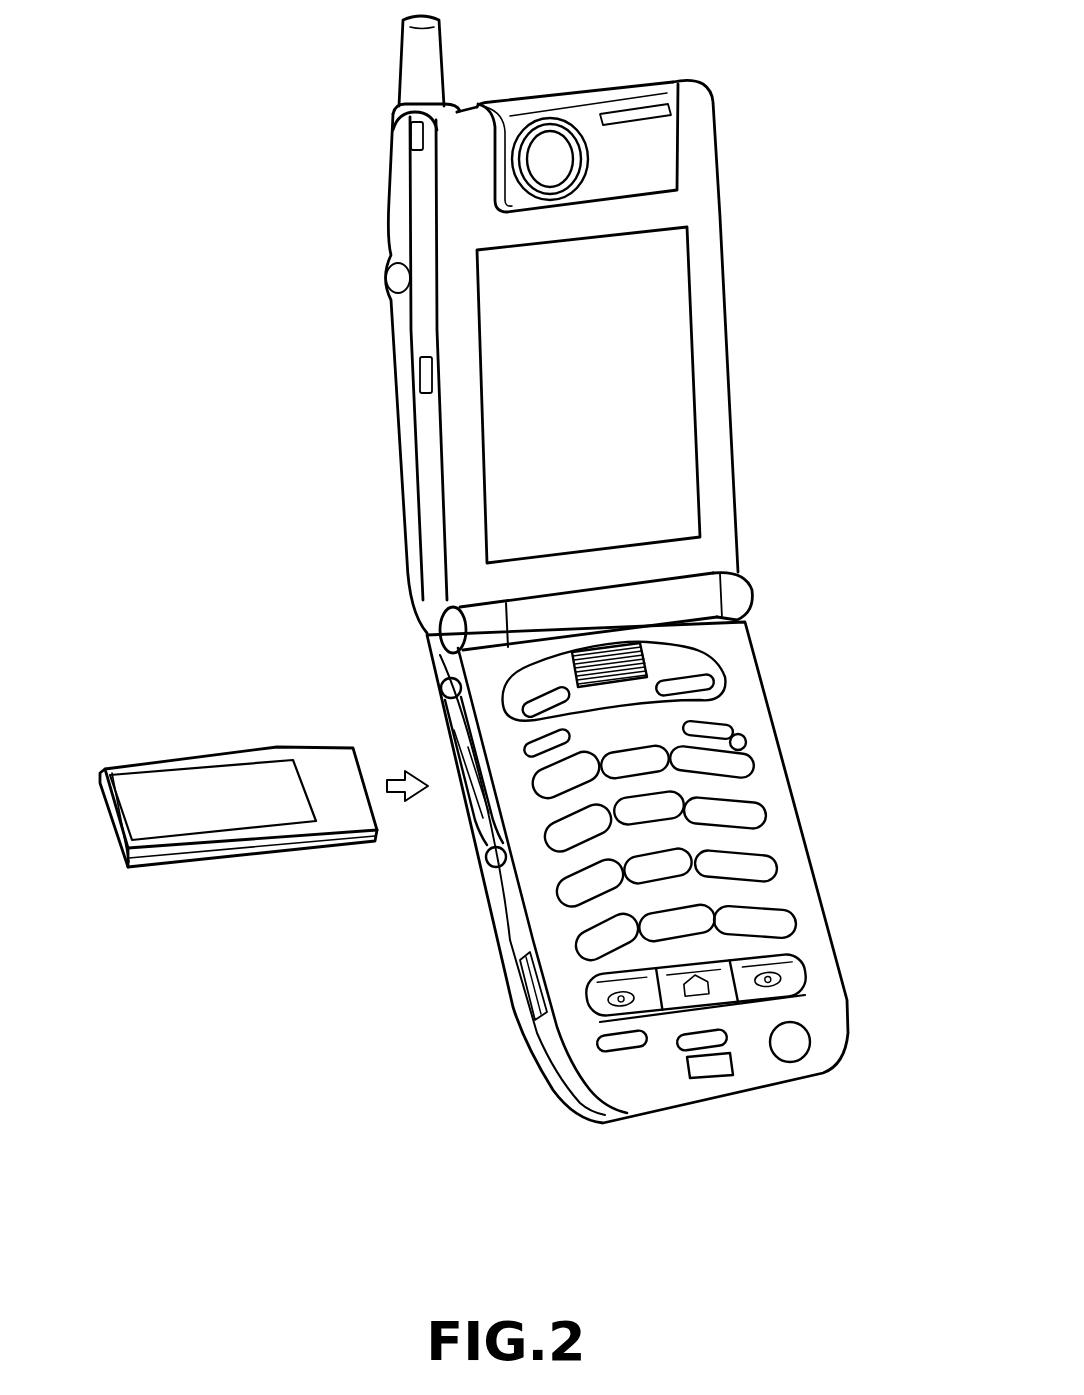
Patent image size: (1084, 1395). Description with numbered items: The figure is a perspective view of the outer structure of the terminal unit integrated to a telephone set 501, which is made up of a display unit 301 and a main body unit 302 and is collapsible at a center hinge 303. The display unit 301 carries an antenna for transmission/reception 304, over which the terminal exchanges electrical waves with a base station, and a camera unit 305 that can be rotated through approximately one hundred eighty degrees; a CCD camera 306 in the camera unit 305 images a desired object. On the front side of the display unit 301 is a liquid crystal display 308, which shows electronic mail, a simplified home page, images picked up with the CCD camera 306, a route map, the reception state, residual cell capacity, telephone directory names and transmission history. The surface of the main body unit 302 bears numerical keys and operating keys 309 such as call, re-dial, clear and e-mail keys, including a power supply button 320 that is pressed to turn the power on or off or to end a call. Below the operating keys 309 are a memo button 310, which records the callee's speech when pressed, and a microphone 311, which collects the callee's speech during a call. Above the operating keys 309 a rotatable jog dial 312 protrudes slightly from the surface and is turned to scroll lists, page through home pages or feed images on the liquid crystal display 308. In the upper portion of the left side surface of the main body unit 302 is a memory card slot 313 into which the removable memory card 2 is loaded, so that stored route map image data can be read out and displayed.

The memory card 2 is at (247, 820).
The display unit 301 is at (706, 265).
The main body unit 302 is at (744, 683).
The center hinge 303 is at (751, 591).
The antenna for transmission/reception 304 is at (400, 67).
The camera unit 305 is at (620, 83).
The CCD camera 306 is at (550, 148).
The liquid crystal display 308 is at (643, 397).
The operating keys 309 is at (783, 716).
The memo button 310 is at (633, 1047).
The microphone 311 is at (717, 1070).
The jog dial 312 is at (573, 653).
The memory card slot 313 is at (490, 853).
The power supply button 320 is at (793, 1043).
The terminal unit integrated to a telephone set 501 is at (378, 1045).